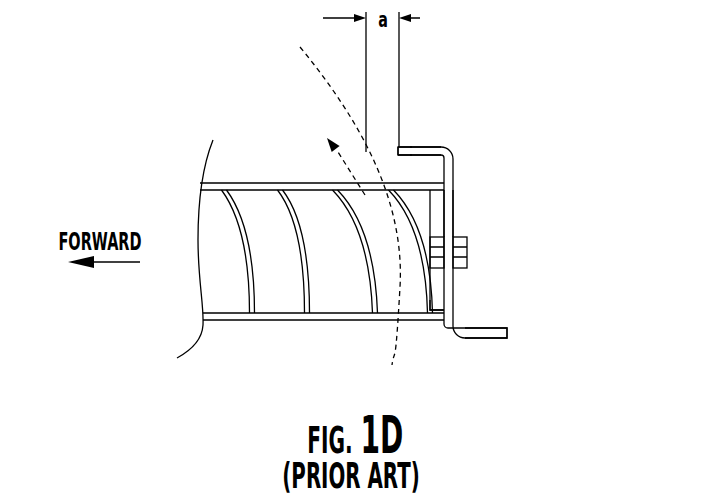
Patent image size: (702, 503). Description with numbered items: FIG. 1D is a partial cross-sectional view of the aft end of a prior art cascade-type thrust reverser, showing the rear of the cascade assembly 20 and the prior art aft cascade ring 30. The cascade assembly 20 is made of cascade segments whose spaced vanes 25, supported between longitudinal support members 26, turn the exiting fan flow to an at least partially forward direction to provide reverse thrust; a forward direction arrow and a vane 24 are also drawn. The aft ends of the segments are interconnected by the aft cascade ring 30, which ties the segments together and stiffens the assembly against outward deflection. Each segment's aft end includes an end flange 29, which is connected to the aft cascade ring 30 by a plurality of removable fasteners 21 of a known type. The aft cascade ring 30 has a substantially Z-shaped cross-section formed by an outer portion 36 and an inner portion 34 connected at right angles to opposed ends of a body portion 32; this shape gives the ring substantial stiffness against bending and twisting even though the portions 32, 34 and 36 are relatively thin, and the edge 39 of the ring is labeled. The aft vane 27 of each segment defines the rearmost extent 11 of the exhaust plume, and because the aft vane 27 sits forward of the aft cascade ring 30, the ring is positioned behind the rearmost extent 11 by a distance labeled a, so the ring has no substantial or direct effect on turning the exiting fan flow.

The rearmost extent of the exhaust plume 11 is at (313, 65).
The cascade assembly 20 is at (280, 135).
The removable fasteners 21 is at (467, 252).
The guide vane 24 is at (362, 265).
The vanes 25 is at (305, 280).
The longitudinal support members 26 is at (260, 210).
The aft vane 27 is at (428, 287).
The end flange 29 is at (455, 287).
The aft cascade ring 30 is at (455, 162).
The body portion 32 is at (455, 208).
The inner portion 34 is at (482, 323).
The outer portion 36 is at (420, 147).
The forward edge of bracket 39 is at (405, 147).